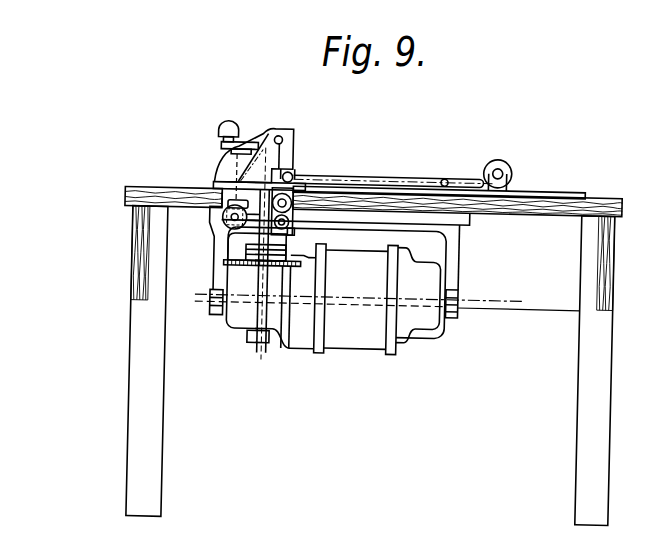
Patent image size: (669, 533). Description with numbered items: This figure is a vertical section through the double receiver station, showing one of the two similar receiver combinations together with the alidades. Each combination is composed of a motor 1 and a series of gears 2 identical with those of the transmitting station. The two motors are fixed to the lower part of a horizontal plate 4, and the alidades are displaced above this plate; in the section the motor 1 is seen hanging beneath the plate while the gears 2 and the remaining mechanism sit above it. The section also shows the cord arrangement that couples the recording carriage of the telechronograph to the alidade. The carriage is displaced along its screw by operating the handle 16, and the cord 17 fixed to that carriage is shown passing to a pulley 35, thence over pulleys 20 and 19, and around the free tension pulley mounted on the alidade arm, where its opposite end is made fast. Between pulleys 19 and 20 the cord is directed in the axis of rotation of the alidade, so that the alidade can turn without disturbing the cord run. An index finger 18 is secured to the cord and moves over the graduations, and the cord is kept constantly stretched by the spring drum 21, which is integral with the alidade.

The motor 1 is at (336, 291).
The series of gears 2 is at (262, 254).
The horizontal plate 4 is at (504, 200).
The handle 16 is at (226, 134).
The cord 17 is at (237, 166).
The index finger 18 is at (403, 186).
The pulley 19 is at (293, 177).
The pulley 20 is at (289, 134).
The spring drum 21 is at (511, 172).
The pulley 35 is at (213, 188).